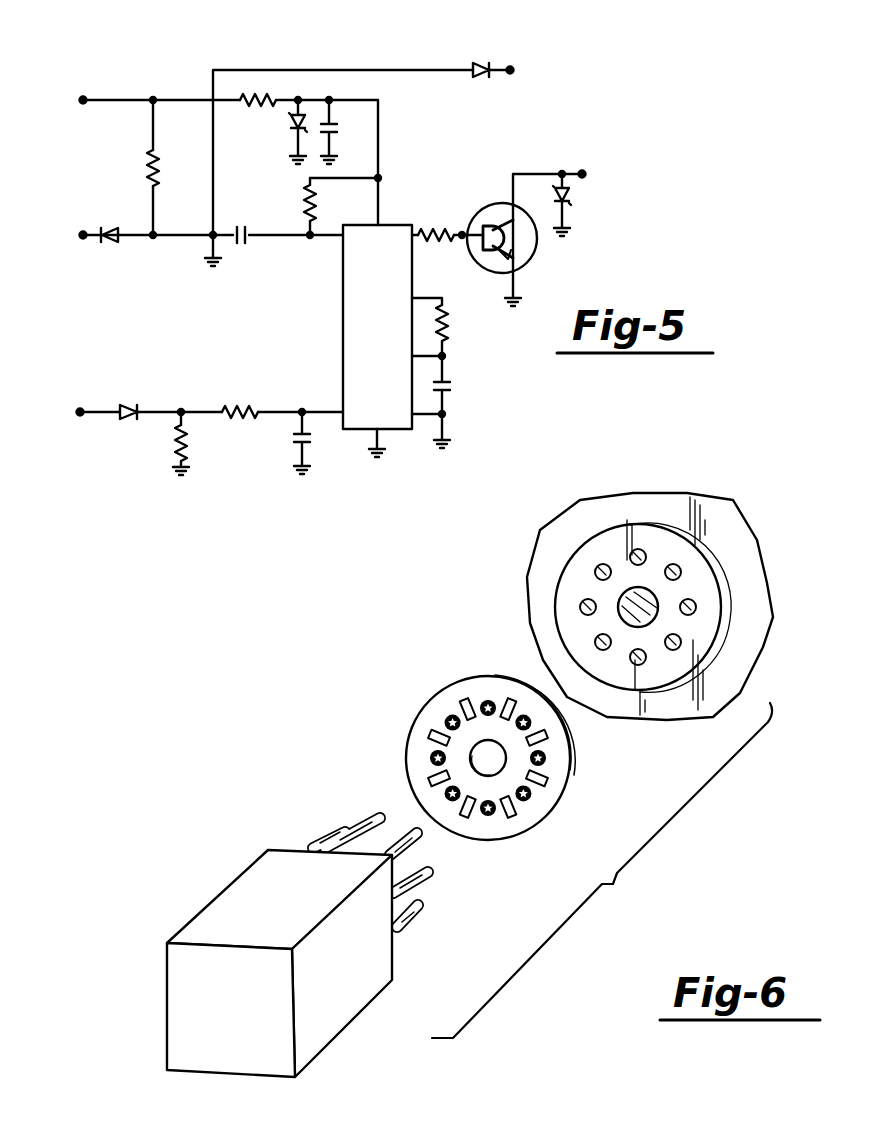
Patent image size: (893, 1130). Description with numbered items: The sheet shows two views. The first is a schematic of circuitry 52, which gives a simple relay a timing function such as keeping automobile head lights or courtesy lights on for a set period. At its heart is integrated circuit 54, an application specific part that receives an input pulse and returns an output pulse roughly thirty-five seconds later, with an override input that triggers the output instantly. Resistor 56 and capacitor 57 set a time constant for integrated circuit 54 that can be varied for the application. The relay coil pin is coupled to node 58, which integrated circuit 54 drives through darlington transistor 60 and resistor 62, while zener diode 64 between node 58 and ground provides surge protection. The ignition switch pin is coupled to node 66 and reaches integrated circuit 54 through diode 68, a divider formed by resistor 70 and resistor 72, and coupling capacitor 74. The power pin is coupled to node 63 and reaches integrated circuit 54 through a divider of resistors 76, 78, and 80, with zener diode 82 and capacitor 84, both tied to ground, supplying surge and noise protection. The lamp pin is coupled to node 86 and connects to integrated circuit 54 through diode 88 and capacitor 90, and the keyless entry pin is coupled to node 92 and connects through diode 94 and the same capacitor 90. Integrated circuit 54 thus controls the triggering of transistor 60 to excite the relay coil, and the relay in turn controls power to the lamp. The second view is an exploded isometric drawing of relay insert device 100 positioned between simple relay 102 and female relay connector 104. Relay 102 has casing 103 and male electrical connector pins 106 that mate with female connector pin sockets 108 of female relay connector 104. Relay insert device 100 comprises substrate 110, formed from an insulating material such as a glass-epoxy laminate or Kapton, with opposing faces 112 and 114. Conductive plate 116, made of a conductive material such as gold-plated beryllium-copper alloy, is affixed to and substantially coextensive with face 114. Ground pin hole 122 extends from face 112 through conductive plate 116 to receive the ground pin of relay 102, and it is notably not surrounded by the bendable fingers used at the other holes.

In FIG. 5, the circuitry 52 is at (168, 76).
In FIG. 5, the integrated circuit 54 is at (343, 341).
In FIG. 5, the resistor 56 is at (444, 330).
In FIG. 5, the capacitor 57 is at (452, 383).
In FIG. 5, the node 58 is at (583, 173).
In FIG. 5, the darlington transistor 60 is at (503, 204).
In FIG. 5, the resistor 62 is at (444, 229).
In FIG. 5, the node 63 is at (83, 98).
In FIG. 5, the zener diode 64 is at (574, 206).
In FIG. 5, the node 66 is at (80, 410).
In FIG. 5, the diode 68 is at (129, 410).
In FIG. 5, the resistor 70 is at (247, 410).
In FIG. 5, the resistor 72 is at (186, 456).
In FIG. 5, the coupling capacitor 74 is at (300, 462).
In FIG. 5, the resistor 76 is at (151, 166).
In FIG. 5, the resistor 78 is at (257, 97).
In FIG. 5, the resistor 80 is at (306, 226).
In FIG. 5, the zener diode 82 is at (292, 128).
In FIG. 5, the capacitor 84 is at (340, 116).
In FIG. 5, the node 86 is at (512, 70).
In FIG. 5, the diode 88 is at (480, 73).
In FIG. 5, the capacitor 90 is at (244, 246).
In FIG. 5, the node 92 is at (83, 233).
In FIG. 5, the diode 94 is at (114, 245).
In FIG. 6, the relay insert device 100 is at (557, 834).
In FIG. 6, the relay 102 is at (317, 924).
In FIG. 6, the casing 103 is at (353, 996).
In FIG. 6, the female relay connector 104 is at (668, 584).
In FIG. 6, the male electrical connector pins 106 is at (380, 816).
In FIG. 6, the female connector pin sockets 108 is at (673, 564).
In FIG. 6, the substrate 110 is at (486, 732).
In FIG. 6, the face 112 is at (435, 709).
In FIG. 6, the face 114 is at (573, 781).
In FIG. 6, the conductive plate 116 is at (579, 718).
In FIG. 6, the ground pin hole 122 is at (440, 757).